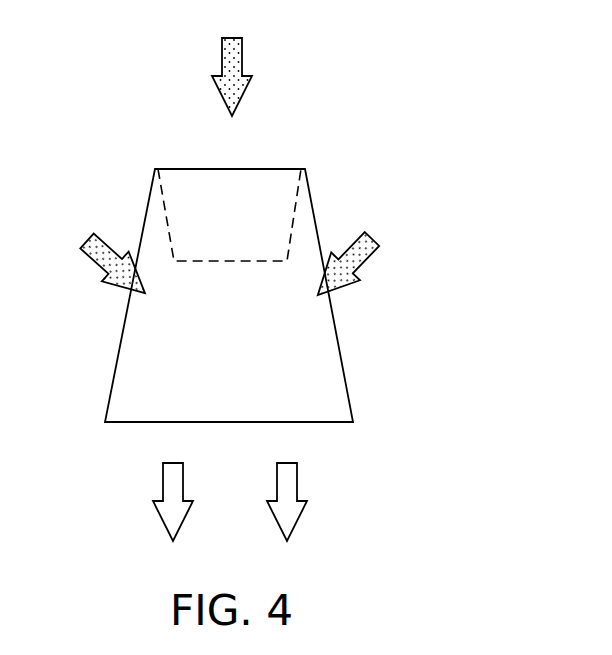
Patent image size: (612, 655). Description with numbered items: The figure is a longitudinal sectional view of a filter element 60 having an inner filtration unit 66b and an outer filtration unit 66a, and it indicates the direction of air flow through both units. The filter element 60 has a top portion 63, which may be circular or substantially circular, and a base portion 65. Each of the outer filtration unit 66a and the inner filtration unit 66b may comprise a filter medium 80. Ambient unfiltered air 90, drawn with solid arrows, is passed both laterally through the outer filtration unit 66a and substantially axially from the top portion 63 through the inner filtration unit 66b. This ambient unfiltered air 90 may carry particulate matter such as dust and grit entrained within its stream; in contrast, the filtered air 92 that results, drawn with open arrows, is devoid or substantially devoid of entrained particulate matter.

The filter element 60 is at (442, 109).
The top portion 63 is at (172, 167).
The base portion 65 is at (122, 424).
The outer filtration unit 66a is at (343, 360).
The inner filtration unit 66b is at (195, 263).
The filter medium 80 is at (250, 226).
The ambient unfiltered air 90 is at (242, 60).
The filtered air 92 is at (183, 483).